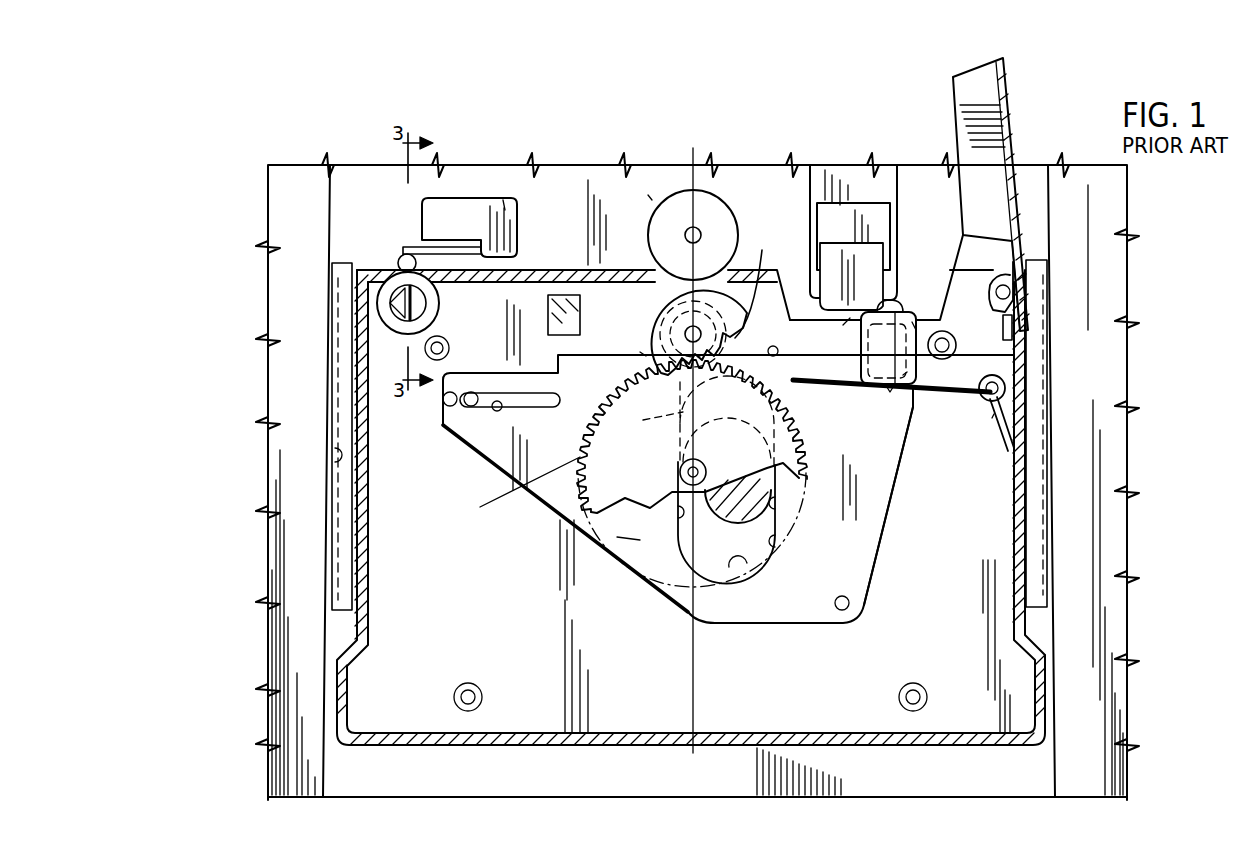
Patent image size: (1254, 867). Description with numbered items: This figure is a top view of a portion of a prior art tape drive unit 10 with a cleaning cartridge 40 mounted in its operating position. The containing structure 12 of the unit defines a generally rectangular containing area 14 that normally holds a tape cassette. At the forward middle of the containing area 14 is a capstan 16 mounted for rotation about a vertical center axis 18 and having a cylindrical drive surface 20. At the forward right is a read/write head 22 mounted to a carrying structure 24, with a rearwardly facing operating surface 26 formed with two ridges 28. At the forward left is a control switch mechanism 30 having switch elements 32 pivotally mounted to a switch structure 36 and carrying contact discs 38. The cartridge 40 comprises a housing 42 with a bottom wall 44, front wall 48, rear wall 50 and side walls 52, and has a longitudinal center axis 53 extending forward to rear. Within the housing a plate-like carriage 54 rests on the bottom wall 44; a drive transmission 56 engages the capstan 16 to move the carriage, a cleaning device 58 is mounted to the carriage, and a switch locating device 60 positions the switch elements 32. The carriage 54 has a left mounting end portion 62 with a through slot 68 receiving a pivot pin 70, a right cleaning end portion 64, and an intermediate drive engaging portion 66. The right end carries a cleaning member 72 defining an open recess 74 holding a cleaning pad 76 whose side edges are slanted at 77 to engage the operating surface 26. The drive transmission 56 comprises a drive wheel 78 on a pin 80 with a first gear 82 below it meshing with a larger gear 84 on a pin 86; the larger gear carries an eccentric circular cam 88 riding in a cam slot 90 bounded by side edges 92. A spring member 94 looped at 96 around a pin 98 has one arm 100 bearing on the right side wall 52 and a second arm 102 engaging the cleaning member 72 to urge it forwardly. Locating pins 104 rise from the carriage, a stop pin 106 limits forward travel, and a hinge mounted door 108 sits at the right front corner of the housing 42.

The tape drive unit 10 is at (268, 187).
The containing structure 12 is at (280, 213).
The containing area 14 is at (335, 456).
The capstan 16 is at (665, 212).
The vertical center axis 18 is at (686, 227).
The cylindrical drive surface 20 is at (648, 195).
The read/write head 22 is at (875, 257).
The carrying structure 24 is at (884, 165).
The operating surface 26 is at (843, 325).
The ridges 28 is at (838, 336).
The control switch mechanism 30 is at (482, 198).
The switch elements 32 is at (407, 247).
The switch structure 36 is at (503, 200).
The contact discs 38 is at (399, 262).
The cartridge 40 is at (464, 750).
The housing 42 is at (525, 745).
The bottom wall 44 is at (758, 676).
The front wall 48 is at (640, 352).
The rear wall 50 is at (580, 745).
The side walls 52 is at (358, 525).
The longitudinal center axis 53 is at (690, 740).
The carriage 54 is at (547, 510).
The drive transmission 56 is at (577, 257).
The cleaning device 58 is at (925, 360).
The switch locating device 60 is at (445, 310).
The left mounting end portion 62 is at (470, 430).
The right cleaning end portion 64 is at (900, 402).
The intermediate drive engaging portion 66 is at (617, 537).
The through slot 68 is at (494, 410).
The pivot pin 70 is at (465, 407).
The cleaning member 72 is at (907, 372).
The open recess 74 is at (897, 332).
The cleaning pad 76 is at (900, 310).
The slanted side edges 77 is at (912, 322).
The drive wheel 78 is at (650, 318).
The pin 80 is at (688, 333).
The first gear 82 is at (795, 244).
The larger gear 84 is at (500, 497).
The pin 86 is at (682, 468).
The circular cam 88 is at (778, 470).
The cam slot 90 is at (767, 528).
The side edges 92 is at (771, 497).
The spring member 94 is at (992, 418).
The loop 96 is at (1004, 387).
The pin 98 is at (1002, 396).
The spring arm 100 is at (1007, 448).
The second spring arm 102 is at (815, 390).
The locating pins 104 is at (448, 408).
The stop pin 106 is at (775, 346).
The hinge mounted door 108 is at (1005, 130).